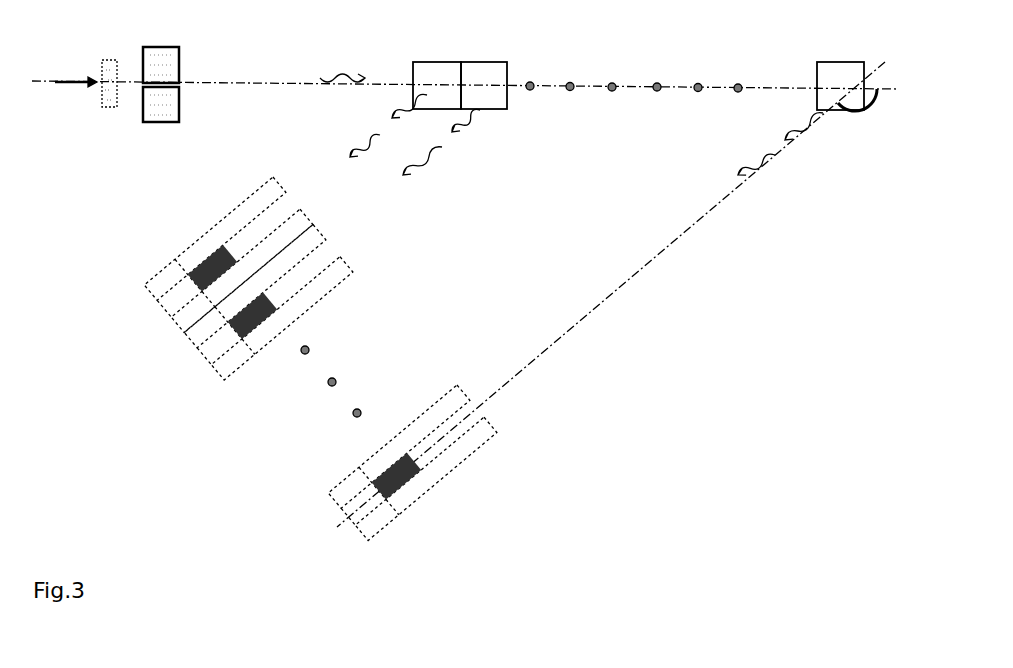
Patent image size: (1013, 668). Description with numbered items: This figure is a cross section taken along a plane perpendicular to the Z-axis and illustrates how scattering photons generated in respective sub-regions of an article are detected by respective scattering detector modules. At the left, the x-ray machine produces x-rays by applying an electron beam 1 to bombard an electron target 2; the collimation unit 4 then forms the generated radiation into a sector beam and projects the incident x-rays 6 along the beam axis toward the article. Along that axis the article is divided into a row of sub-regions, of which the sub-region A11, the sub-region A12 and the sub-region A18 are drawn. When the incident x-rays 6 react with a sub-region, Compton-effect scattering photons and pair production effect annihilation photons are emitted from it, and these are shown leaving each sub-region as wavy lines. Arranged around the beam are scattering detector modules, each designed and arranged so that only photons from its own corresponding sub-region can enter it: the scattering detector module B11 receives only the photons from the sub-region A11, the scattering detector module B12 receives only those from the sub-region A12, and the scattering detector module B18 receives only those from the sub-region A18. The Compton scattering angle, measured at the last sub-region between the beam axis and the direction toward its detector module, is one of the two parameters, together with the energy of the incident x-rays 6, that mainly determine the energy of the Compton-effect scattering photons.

The electron beam 1 is at (76, 67).
The electron target 2 is at (109, 67).
The collimation unit 4 is at (161, 72).
The x-rays 6 is at (342, 60).
The sub-region A11 is at (437, 85).
The sub-region A12 is at (484, 85).
The sub-region A18 is at (840, 86).
The scattering detector module B11 is at (213, 257).
The scattering detector module B12 is at (253, 303).
The scattering detector module B18 is at (396, 466).